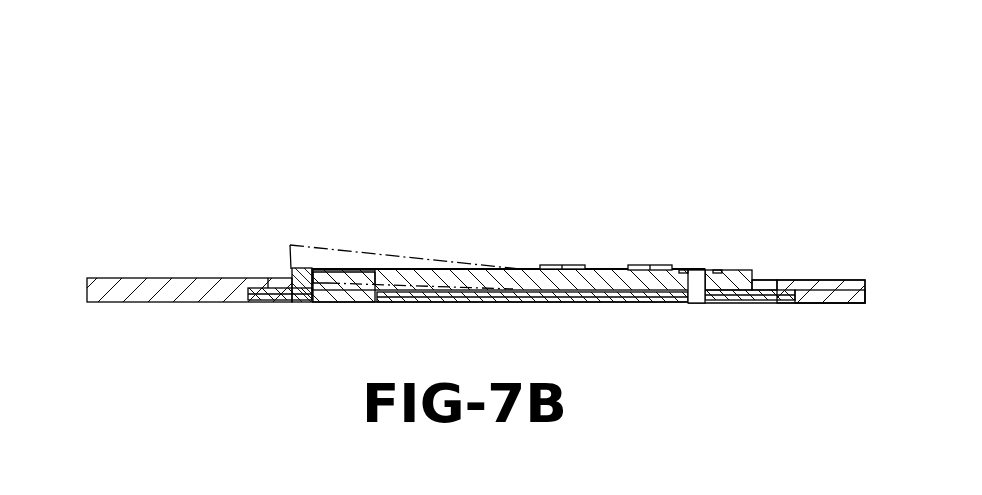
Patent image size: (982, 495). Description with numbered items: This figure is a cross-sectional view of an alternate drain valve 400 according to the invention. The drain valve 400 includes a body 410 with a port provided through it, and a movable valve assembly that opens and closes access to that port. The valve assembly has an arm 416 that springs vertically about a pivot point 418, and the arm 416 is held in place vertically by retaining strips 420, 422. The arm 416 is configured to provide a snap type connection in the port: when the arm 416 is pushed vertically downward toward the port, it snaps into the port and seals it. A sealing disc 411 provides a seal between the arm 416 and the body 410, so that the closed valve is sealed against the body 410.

The drain valve 400 is at (789, 190).
The body 410 is at (161, 298).
The sealing disc 411 is at (755, 296).
The arm 416 is at (291, 268).
The pivot point 418 is at (699, 274).
The retaining strip 420 is at (657, 266).
The retaining strip 422 is at (562, 266).